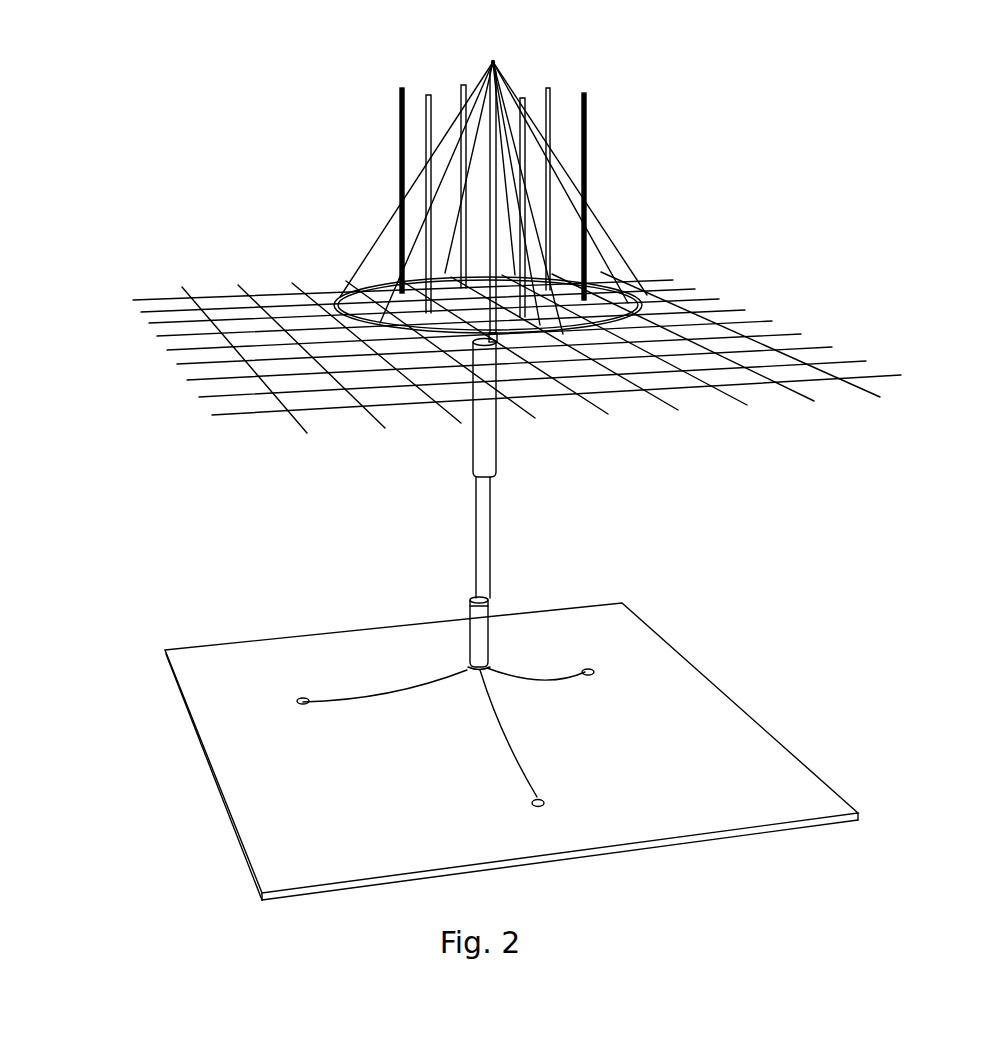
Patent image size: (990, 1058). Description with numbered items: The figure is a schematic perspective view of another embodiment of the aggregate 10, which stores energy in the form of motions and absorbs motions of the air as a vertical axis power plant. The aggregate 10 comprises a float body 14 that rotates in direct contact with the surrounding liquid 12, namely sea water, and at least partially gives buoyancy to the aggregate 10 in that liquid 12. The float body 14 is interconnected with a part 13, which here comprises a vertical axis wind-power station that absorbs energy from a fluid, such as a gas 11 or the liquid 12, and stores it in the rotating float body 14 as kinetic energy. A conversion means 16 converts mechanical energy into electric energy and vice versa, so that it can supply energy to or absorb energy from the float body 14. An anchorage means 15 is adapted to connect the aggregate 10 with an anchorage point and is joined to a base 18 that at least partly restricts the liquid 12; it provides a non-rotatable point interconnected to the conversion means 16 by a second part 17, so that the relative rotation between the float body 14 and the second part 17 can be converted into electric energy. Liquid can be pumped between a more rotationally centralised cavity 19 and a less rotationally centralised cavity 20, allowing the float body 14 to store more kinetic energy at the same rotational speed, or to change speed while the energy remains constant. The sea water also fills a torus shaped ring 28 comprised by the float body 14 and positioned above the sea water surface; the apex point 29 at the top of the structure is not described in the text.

The aggregate 10 is at (756, 168).
The gas 11 is at (631, 73).
The liquid 12 is at (909, 389).
The energy absorbing part 13 is at (426, 135).
The float body 14 is at (483, 213).
The anchorage means 15 is at (497, 709).
The conversion means 16 is at (477, 652).
The second part 17 is at (467, 667).
The base 18 is at (511, 751).
The rotationally centralised cavity 19 is at (543, 537).
The less rotationally centralised cavity 20 is at (433, 198).
The torus shaped ring 28 is at (542, 296).
The apex 29 is at (496, 62).